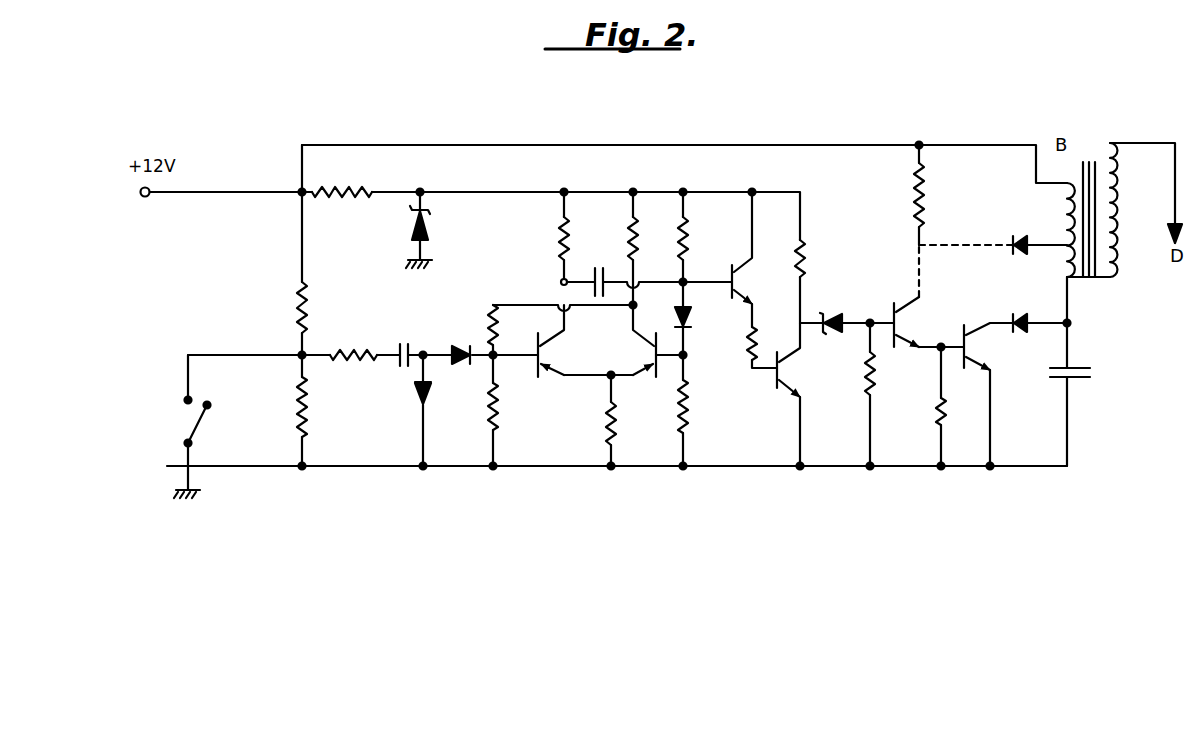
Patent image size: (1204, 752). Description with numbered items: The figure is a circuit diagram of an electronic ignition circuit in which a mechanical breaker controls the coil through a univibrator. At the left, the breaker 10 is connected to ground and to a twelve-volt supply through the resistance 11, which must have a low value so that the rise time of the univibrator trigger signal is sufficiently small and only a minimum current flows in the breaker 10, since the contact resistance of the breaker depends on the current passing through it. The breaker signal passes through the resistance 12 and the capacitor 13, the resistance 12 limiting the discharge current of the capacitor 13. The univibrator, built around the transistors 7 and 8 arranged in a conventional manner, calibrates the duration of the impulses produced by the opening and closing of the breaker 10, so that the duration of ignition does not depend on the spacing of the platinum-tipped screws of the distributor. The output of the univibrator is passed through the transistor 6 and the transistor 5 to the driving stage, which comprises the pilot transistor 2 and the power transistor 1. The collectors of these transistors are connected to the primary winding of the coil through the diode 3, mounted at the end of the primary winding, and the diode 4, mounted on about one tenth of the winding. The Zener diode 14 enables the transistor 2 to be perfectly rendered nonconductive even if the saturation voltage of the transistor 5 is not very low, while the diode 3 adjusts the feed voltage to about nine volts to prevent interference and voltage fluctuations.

The power transistor 1 is at (988, 381).
The pilot transistor 2 is at (929, 296).
The diode 3 is at (1040, 344).
The diode 4 is at (1037, 227).
The transistor 5 is at (801, 394).
The transistor 6 is at (751, 259).
The transistor 7 is at (643, 341).
The transistor 8 is at (563, 341).
The breaker 10 is at (181, 426).
The resistance 11 is at (329, 307).
The resistance 12 is at (354, 339).
The capacitor 13 is at (427, 336).
The Zener diode 14 is at (838, 308).